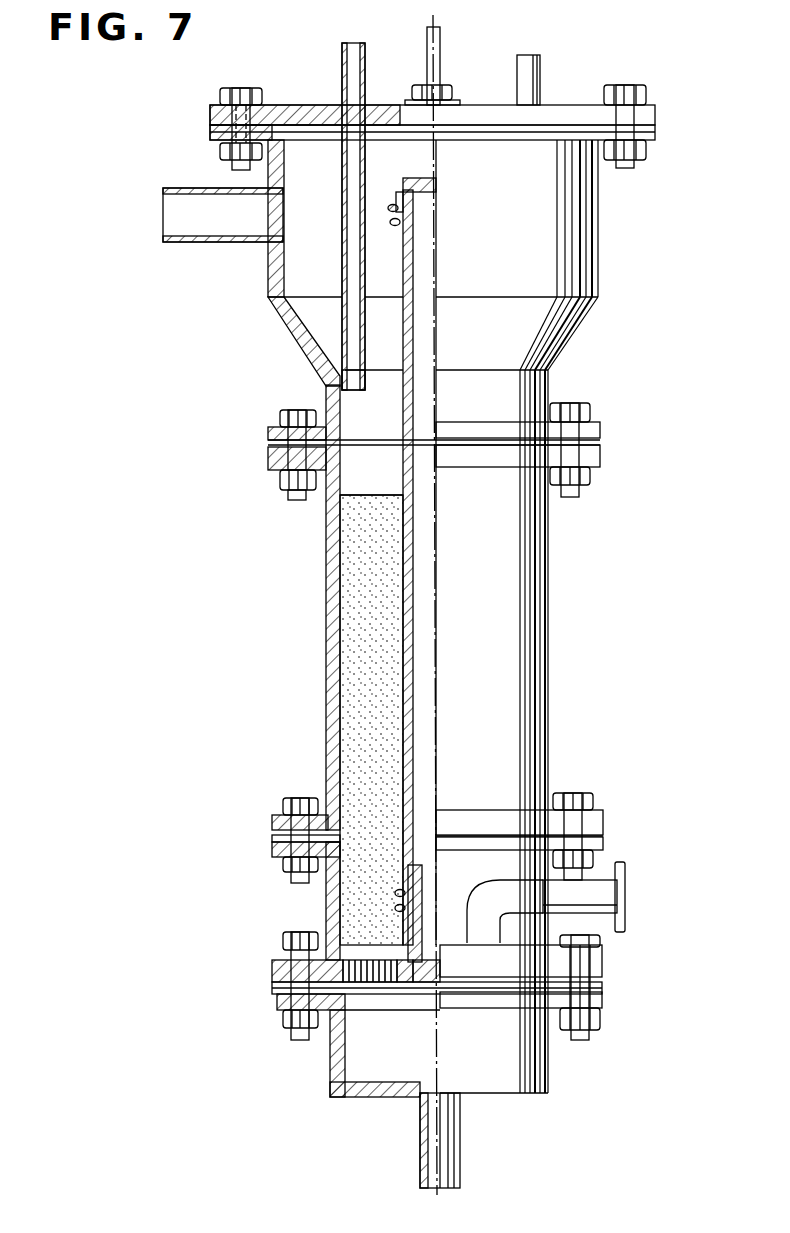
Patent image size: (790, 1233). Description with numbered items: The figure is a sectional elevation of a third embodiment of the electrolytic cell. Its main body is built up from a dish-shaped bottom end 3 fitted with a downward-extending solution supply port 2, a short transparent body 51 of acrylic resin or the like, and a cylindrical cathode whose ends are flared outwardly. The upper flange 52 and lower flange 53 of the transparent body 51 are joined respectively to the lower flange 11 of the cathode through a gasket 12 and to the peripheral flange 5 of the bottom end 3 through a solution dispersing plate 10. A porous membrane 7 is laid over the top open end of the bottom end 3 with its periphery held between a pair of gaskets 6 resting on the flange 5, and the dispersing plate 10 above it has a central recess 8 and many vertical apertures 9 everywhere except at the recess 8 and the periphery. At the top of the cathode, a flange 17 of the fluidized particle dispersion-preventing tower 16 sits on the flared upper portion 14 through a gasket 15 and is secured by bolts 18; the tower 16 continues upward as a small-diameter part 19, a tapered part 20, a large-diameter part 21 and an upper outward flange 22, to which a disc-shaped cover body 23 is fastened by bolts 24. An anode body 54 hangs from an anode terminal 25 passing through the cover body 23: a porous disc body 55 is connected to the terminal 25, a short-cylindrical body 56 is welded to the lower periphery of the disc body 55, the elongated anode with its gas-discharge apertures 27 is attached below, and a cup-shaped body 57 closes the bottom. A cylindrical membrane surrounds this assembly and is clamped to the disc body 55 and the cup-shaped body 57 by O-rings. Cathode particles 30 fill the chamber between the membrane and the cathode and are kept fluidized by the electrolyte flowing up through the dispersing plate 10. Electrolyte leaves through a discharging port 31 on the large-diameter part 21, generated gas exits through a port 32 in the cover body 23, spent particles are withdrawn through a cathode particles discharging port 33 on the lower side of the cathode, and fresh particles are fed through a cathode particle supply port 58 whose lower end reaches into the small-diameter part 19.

The solution supply port 2 is at (420, 1146).
The bottom end 3 is at (332, 1073).
The peripheral flange 5 is at (274, 1010).
The gaskets 6 is at (272, 990).
The porous membrane 7 is at (426, 990).
The recess 8 is at (406, 986).
The vertical apertures 9 is at (374, 986).
The solution dispersing plate 10 is at (602, 966).
The outwardly flared portion of the lower cathode 11 is at (272, 823).
The gasket 12 is at (272, 839).
The outwardly flared portion of the upper end of the cathode 14 is at (270, 453).
The gasket 15 is at (270, 442).
The fluidized particle dispersion-preventing tower 16 is at (604, 221).
The flange 17 is at (272, 428).
The bolts 18 is at (305, 414).
The small-diameter part 19 is at (320, 386).
The tapered part 20 is at (286, 330).
The large-diameter part 21 is at (268, 283).
The upper portion outward flange 22 is at (216, 146).
The cover body 23 is at (488, 105).
The bolts 24 is at (246, 90).
The anode terminal 25 is at (441, 36).
The apertures 27 is at (414, 556).
The cathode particles 30 is at (352, 689).
The electrolyte discharging port 31 is at (194, 244).
The generated gas discharge port 32 is at (536, 60).
The cathode particles discharging port 33 is at (626, 896).
The transparent body 51 is at (326, 909).
The upper flange 52 is at (272, 851).
The lower flange 53 is at (278, 961).
The anode body 54 is at (401, 568).
The porous disc body 55 is at (437, 186).
The short-cylindrical body 56 is at (406, 192).
The cup-shaped body 57 is at (415, 946).
The cathode particle supply port 58 is at (343, 214).